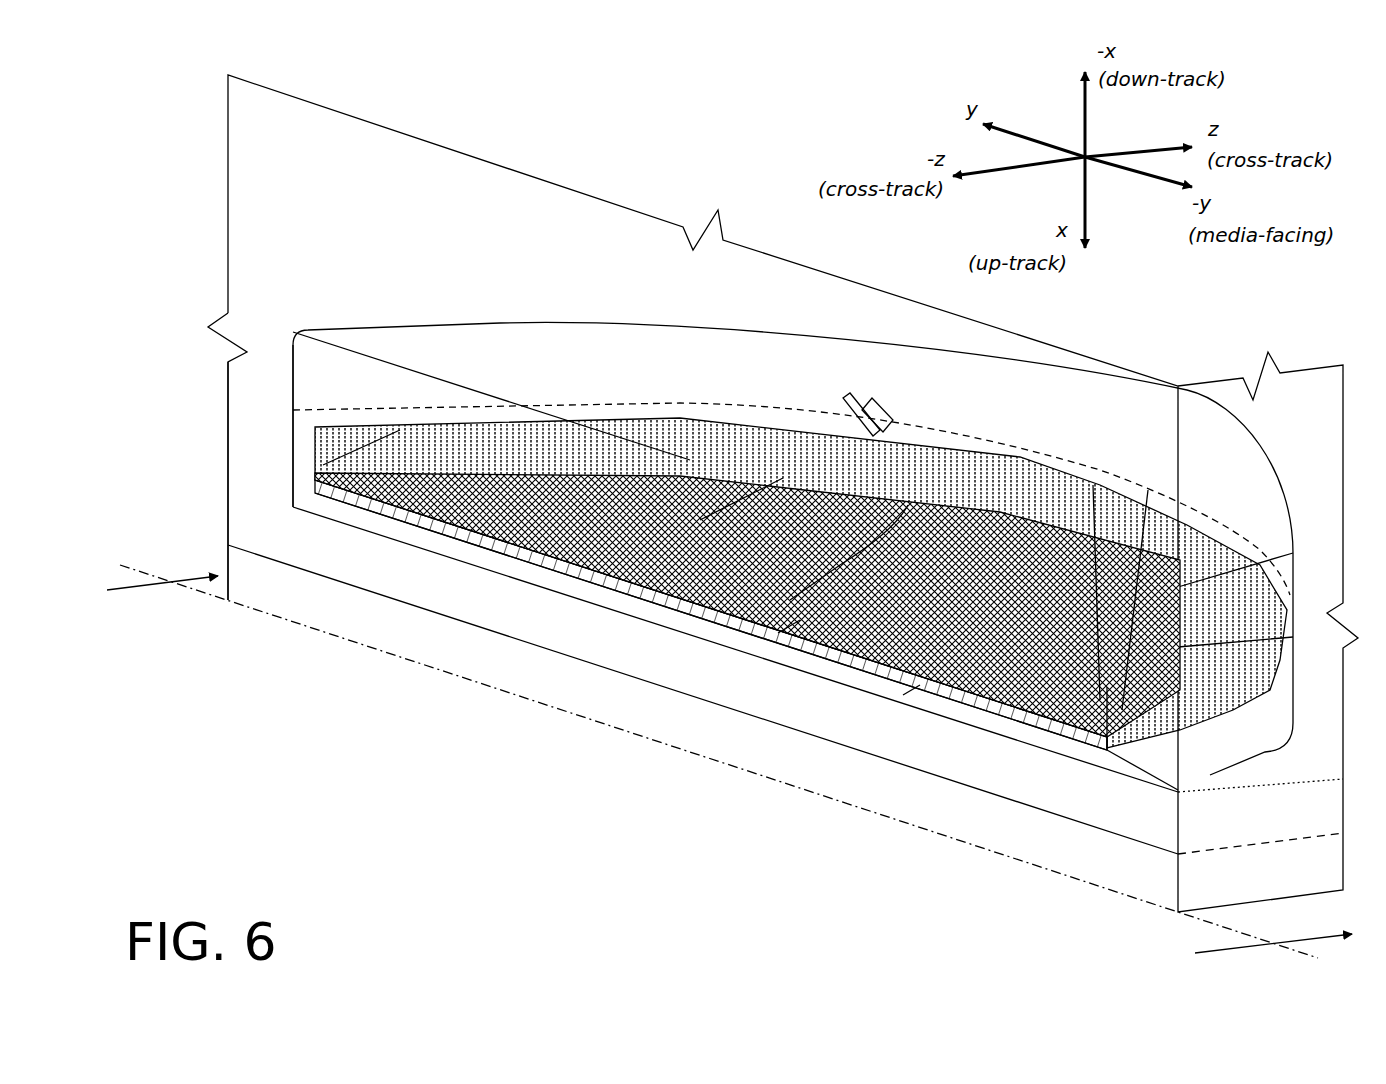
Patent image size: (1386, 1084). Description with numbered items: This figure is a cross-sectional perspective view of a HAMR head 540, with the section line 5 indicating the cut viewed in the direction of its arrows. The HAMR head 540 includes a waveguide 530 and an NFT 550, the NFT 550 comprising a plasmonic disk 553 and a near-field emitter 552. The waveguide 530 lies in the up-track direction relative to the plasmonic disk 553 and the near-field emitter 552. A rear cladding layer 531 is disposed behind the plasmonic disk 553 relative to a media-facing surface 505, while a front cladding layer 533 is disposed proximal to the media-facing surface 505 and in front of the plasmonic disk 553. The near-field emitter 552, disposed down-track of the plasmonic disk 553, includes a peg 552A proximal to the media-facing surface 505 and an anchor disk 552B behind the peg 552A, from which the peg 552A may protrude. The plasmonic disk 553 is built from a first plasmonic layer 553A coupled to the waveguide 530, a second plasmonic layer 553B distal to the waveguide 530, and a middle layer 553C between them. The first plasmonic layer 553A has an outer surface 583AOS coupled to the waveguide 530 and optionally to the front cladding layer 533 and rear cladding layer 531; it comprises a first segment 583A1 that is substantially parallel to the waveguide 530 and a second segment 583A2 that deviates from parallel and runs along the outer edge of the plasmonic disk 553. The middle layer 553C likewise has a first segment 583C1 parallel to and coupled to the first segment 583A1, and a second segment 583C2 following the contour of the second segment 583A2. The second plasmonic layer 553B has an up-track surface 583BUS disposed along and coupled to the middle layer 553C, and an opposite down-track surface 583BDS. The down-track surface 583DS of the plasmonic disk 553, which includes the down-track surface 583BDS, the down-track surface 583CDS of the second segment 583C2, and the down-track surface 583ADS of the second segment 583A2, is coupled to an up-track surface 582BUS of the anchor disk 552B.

The media-facing surface 505 is at (1330, 420).
The waveguide 530 is at (727, 693).
The rear cladding layer 531 is at (285, 445).
The front cladding layer 533 is at (1205, 785).
The HAMR head 540 is at (697, 128).
The NFT 550 is at (512, 270).
The near-field emitter 552 is at (285, 386).
The peg 552A is at (1187, 648).
The anchor disk 552B is at (340, 383).
The plasmonic disk 553 is at (283, 470).
The first plasmonic layer 553A is at (372, 523).
The second plasmonic layer 553B is at (497, 513).
The middle layer 553C is at (562, 568).
The up-track surface of anchor disk 582BUS is at (908, 505).
The outer surface of first plasmonic layer 583AOS is at (318, 522).
The down-track surface of second segment of first plasmonic layer 583ADS is at (877, 437).
The up-track surface of second plasmonic layer 583BUS is at (323, 465).
The down-track surface of second plasmonic layer 583BDS is at (783, 478).
The down-track surface of second segment of middle layer 583CDS is at (845, 400).
The second segment of middle layer 583C2 is at (1100, 698).
The second segment of first plasmonic layer 583A2 is at (1122, 708).
The first segment of middle layer 583C1 is at (778, 635).
The first segment of first plasmonic layer 583A1 is at (903, 697).
The down-track surface of plasmonic disk 583DS is at (760, 555).
The section line 5- 5 is at (729, 752).